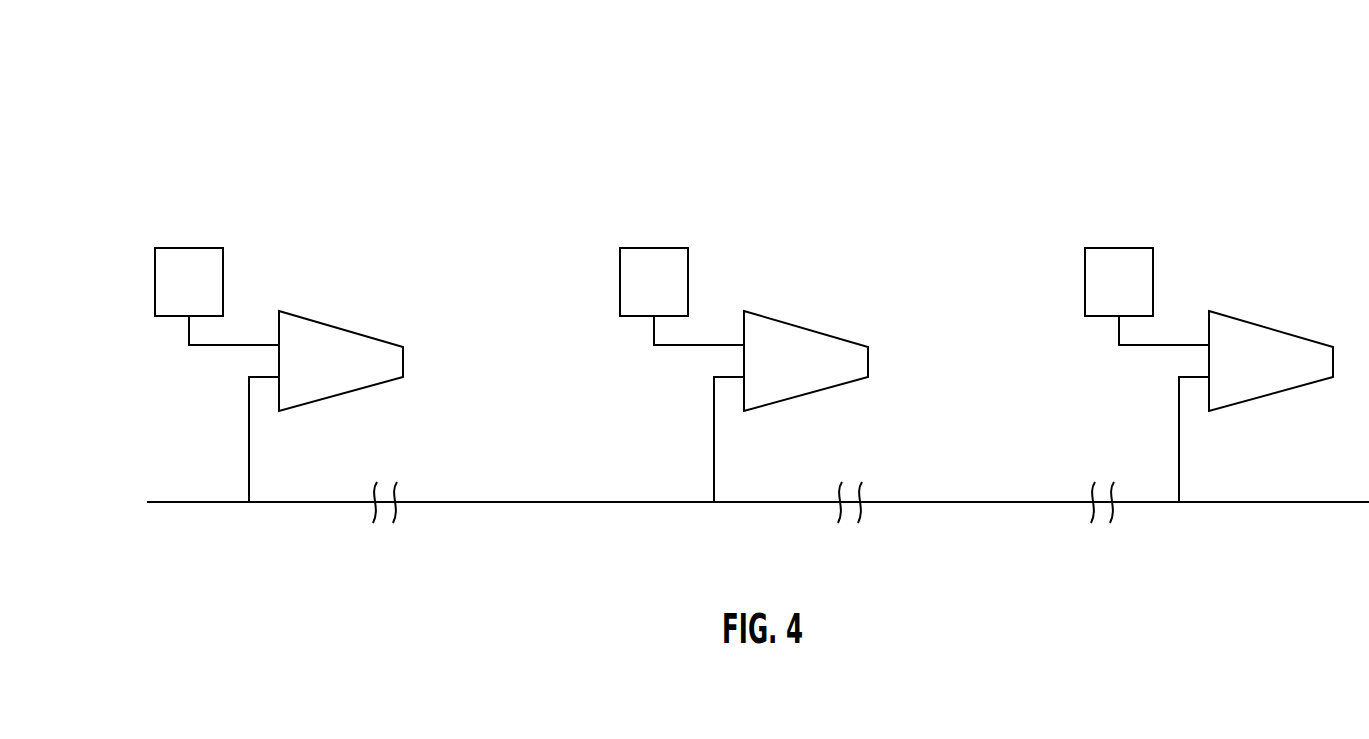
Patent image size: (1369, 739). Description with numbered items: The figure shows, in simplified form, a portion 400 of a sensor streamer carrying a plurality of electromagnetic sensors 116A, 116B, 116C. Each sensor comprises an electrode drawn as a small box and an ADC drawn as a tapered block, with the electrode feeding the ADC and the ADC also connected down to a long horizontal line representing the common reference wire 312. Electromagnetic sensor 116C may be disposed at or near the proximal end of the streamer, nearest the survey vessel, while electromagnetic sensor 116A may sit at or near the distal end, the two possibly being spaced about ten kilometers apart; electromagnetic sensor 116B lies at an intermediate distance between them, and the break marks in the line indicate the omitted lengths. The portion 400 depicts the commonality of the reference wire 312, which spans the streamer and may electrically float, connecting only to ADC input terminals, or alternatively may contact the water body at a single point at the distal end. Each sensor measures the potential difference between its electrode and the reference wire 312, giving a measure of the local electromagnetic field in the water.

The portion of sensor streamer 400 is at (299, 83).
The electromagnetic sensor 116A is at (283, 214).
The electromagnetic sensor 116B is at (748, 214).
The electromagnetic sensor 116C is at (1213, 214).
The reference wire 312 is at (205, 502).